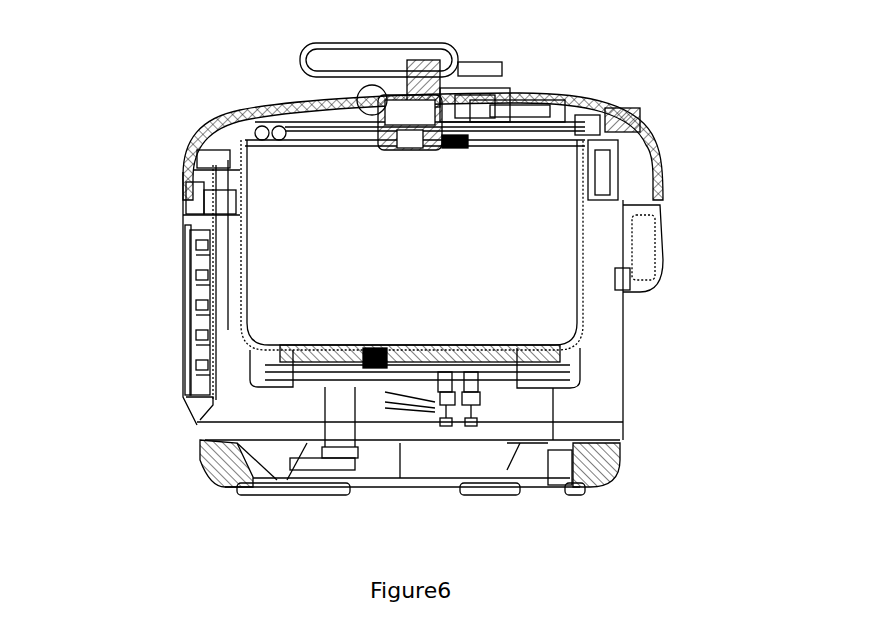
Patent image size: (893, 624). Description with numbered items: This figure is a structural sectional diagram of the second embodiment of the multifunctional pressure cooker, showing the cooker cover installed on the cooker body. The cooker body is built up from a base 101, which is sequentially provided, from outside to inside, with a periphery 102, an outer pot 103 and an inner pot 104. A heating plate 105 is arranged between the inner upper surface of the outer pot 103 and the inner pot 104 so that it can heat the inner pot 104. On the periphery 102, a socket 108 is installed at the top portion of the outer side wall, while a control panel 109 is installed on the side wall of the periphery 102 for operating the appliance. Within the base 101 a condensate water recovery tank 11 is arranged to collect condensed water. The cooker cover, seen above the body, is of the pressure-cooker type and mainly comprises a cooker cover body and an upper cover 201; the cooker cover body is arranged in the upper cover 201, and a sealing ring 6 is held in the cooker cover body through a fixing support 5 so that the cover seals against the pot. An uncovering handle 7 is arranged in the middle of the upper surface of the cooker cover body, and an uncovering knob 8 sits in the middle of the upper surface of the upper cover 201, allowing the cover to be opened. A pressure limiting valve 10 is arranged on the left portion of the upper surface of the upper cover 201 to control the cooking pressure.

The fixing support 5 is at (235, 113).
The sealing ring 6 is at (190, 142).
The uncovering handle 7 is at (615, 110).
The uncovering knob 8 is at (298, 65).
The pressure limiting valve 10 is at (467, 148).
The condensate water recovery tank 11 is at (520, 458).
The base 101 is at (215, 462).
The periphery 102 is at (627, 312).
The outer pot 103 is at (238, 277).
The inner pot 104 is at (236, 214).
The heating plate 105 is at (290, 350).
The socket 108 is at (660, 193).
The control panel 109 is at (205, 310).
The upper cover 201 is at (520, 87).